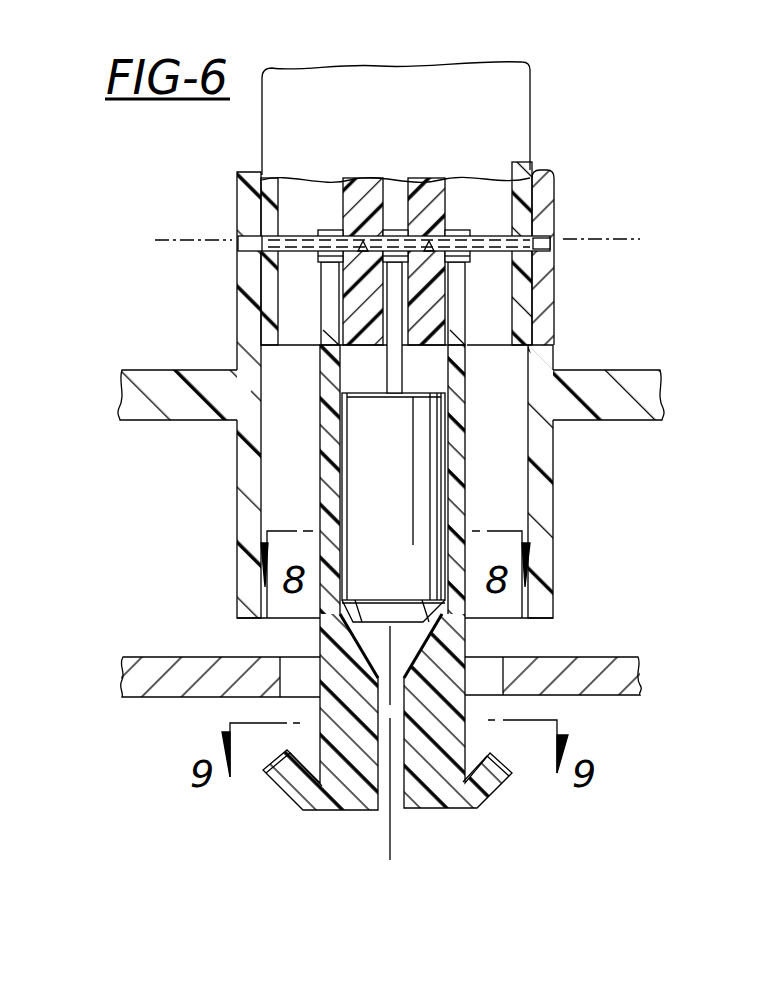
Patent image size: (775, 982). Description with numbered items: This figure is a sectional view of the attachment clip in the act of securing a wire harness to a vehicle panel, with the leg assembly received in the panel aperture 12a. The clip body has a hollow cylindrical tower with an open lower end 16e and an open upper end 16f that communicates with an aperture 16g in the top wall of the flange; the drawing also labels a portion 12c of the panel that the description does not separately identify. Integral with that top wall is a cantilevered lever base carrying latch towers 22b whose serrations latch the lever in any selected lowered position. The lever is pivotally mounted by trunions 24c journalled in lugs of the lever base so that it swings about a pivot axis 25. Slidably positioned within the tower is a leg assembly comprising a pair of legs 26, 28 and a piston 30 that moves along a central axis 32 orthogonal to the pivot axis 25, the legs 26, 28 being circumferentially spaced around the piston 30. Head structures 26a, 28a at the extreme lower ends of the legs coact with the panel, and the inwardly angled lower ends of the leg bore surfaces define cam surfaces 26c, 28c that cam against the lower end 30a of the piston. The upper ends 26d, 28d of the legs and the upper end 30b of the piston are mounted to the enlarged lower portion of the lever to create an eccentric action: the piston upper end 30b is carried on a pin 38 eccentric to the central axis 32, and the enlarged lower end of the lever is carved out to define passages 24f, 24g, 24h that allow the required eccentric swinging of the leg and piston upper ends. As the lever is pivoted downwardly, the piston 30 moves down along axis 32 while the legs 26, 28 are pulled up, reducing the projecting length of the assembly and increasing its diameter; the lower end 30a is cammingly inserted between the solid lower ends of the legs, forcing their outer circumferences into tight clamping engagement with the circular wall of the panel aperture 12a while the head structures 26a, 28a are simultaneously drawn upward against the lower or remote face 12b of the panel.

The panel aperture 12a is at (497, 707).
The lower or remote face of panel 12b is at (156, 697).
The plate portion 12c is at (150, 657).
The open lower end of tower 16e is at (262, 600).
The open upper end of tower 16f is at (261, 382).
The aperture in upper flange wall 16g is at (528, 620).
The latch towers 22b is at (545, 192).
The trunions 24c is at (537, 248).
The passage 24f is at (278, 294).
The passage 24g is at (406, 172).
The passage 24h is at (497, 312).
The pivot axis 25 is at (617, 238).
The leg 26 is at (273, 491).
The head structure 26a is at (273, 783).
The cam surface 26c is at (363, 648).
The upper end of leg 26d is at (340, 228).
The leg 28 is at (550, 513).
The head structure 28a is at (483, 802).
The cam surface 28c is at (418, 645).
The upper end of leg 28d is at (460, 234).
The piston 30 is at (471, 507).
The lower end of piston 30a is at (412, 590).
The upper end of piston 30b is at (396, 230).
The central axis 32 is at (372, 828).
The pin 38 is at (358, 180).